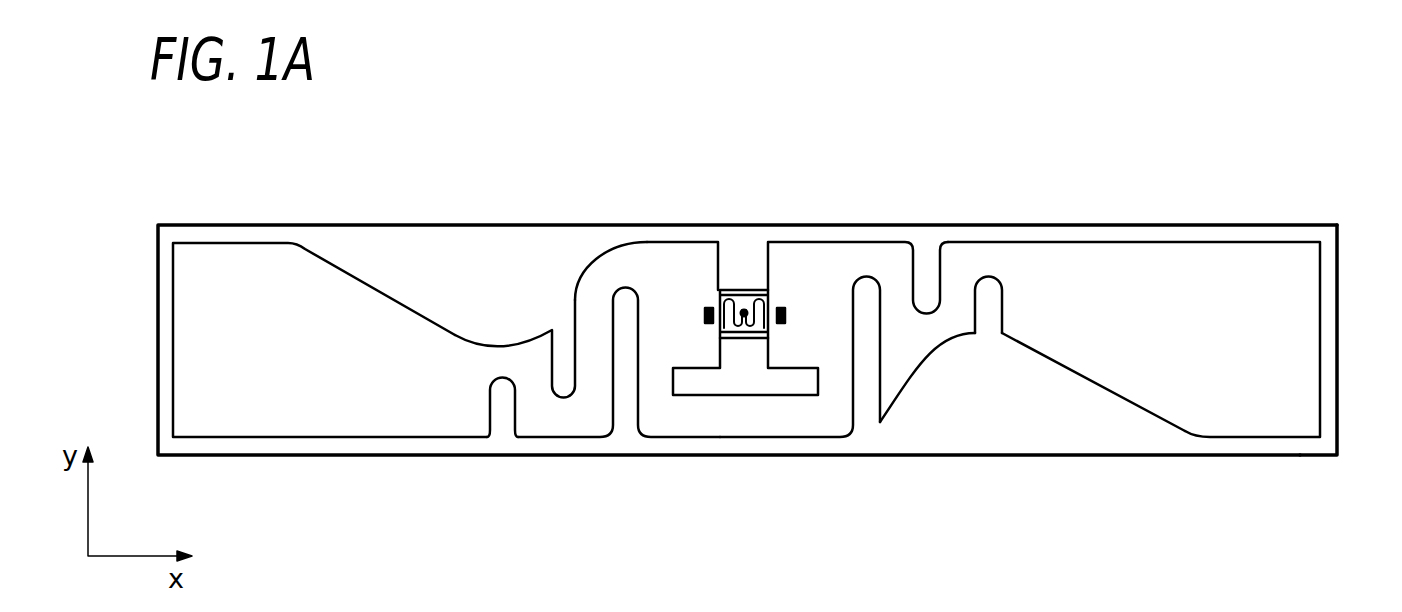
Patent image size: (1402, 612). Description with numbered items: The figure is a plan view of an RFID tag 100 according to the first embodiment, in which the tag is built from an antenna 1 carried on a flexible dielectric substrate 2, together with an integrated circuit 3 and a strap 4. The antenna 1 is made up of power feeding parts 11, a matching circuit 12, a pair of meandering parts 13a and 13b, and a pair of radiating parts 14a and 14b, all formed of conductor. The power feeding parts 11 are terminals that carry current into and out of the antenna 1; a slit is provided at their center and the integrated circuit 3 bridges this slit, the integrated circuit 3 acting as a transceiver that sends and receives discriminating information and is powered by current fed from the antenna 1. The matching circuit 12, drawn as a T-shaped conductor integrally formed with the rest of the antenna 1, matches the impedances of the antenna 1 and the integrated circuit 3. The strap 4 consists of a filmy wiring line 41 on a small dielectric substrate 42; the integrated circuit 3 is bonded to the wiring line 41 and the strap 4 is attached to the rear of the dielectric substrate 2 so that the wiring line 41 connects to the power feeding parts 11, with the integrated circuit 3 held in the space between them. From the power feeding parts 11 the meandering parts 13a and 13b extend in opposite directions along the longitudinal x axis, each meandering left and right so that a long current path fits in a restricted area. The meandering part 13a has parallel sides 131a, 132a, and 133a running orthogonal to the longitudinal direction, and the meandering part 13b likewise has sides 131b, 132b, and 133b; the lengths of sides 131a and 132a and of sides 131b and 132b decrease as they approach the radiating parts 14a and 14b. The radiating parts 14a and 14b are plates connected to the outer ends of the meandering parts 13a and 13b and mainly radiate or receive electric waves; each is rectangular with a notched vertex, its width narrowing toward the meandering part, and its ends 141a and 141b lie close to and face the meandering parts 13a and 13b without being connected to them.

The RFID tag 100 is at (1173, 222).
The antenna 1 is at (1325, 305).
The dielectric substrate 2 is at (1262, 225).
The integrated circuit 3 is at (756, 338).
The strap 4 is at (710, 433).
The wiring line 41 is at (734, 338).
The dielectric substrate of the strap 42 is at (749, 338).
The power feeding parts 11 is at (782, 306).
The matching circuit 12 is at (801, 400).
The meandering part 13a is at (667, 457).
The meandering part 13b is at (998, 235).
The side 131a is at (535, 383).
The side 132a is at (592, 318).
The side 133a is at (647, 300).
The side 131b is at (955, 313).
The side 132b is at (893, 352).
The side 133b is at (843, 392).
The radiating part 14a is at (322, 432).
The radiating part 14b is at (1236, 435).
The end 141a is at (490, 407).
The end 141b is at (1003, 305).